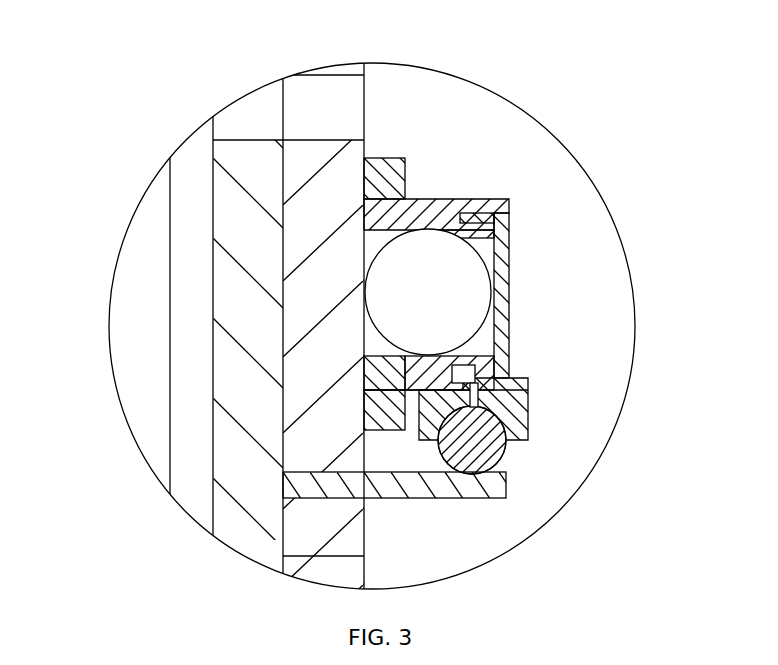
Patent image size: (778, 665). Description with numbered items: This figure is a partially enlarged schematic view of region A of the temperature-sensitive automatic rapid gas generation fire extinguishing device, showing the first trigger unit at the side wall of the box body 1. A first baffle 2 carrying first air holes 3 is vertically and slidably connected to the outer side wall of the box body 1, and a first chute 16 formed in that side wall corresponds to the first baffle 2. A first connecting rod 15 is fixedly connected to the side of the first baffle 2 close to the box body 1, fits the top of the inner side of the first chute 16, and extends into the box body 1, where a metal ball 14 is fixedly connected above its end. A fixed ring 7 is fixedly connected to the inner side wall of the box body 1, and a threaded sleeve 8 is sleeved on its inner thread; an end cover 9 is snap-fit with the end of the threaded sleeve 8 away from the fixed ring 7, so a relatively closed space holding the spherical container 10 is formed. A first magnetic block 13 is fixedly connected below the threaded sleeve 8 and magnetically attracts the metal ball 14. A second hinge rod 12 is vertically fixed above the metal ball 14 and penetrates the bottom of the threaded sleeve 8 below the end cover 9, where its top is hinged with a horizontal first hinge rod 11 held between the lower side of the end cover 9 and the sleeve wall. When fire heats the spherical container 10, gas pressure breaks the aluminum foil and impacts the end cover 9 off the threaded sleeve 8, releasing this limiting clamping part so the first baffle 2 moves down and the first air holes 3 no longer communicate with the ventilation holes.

The enlarged region A is at (114, 264).
The box body 1 is at (332, 205).
The first baffle 2 is at (235, 345).
The first air holes 3 is at (253, 120).
The fixed ring 7 is at (383, 165).
The threaded sleeve 8 is at (428, 215).
The end cover 9 is at (505, 244).
The spherical container 10 is at (470, 283).
The first hinge rod 11 is at (472, 383).
The second hinge rod 12 is at (490, 388).
The first magnetic block 13 is at (528, 408).
The metal ball 14 is at (500, 437).
The first connecting rod 15 is at (482, 482).
The first chute 16 is at (335, 516).